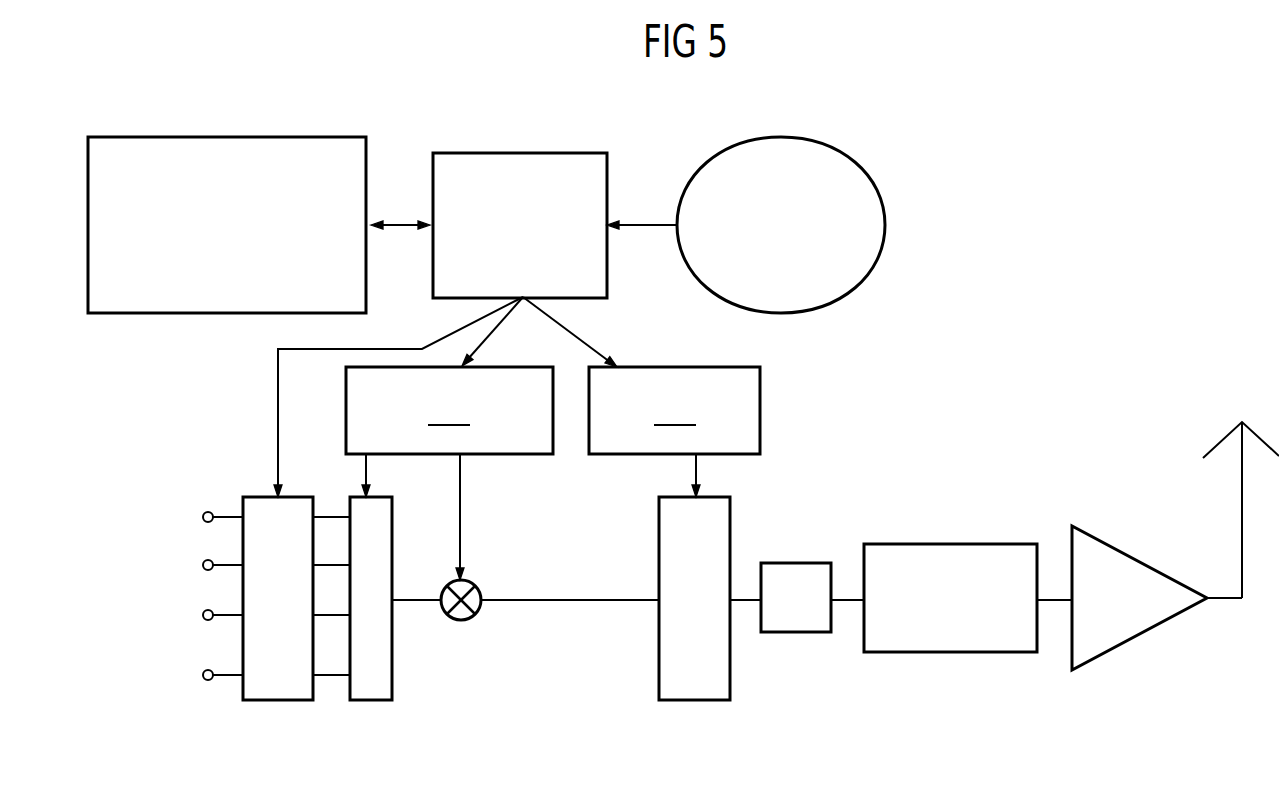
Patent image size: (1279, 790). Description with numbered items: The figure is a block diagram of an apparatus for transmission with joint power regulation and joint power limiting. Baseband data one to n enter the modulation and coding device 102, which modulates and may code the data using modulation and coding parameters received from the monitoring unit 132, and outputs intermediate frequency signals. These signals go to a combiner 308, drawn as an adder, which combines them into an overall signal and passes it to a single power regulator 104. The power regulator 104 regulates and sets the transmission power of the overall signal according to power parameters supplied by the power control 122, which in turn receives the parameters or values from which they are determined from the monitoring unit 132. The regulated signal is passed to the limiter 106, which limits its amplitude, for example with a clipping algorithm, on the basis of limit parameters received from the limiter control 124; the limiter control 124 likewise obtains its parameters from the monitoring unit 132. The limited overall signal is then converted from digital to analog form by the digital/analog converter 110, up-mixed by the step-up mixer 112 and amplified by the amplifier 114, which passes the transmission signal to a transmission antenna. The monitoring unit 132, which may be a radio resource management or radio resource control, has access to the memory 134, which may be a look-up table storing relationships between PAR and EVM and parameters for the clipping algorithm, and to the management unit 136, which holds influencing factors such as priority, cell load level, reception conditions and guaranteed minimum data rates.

The modulation and coding device 102 is at (281, 700).
The combiner 308 is at (373, 700).
The power regulator 104 is at (461, 622).
The limiter 106 is at (696, 700).
The digital/analog converter 110 is at (797, 563).
The step-up mixer 112 is at (951, 544).
The amplifier 114 is at (1121, 548).
The power control 122 is at (449, 410).
The limiter control 124 is at (674, 410).
The monitoring unit 132 is at (518, 153).
The memory 134 is at (225, 137).
The management unit 136 is at (781, 137).